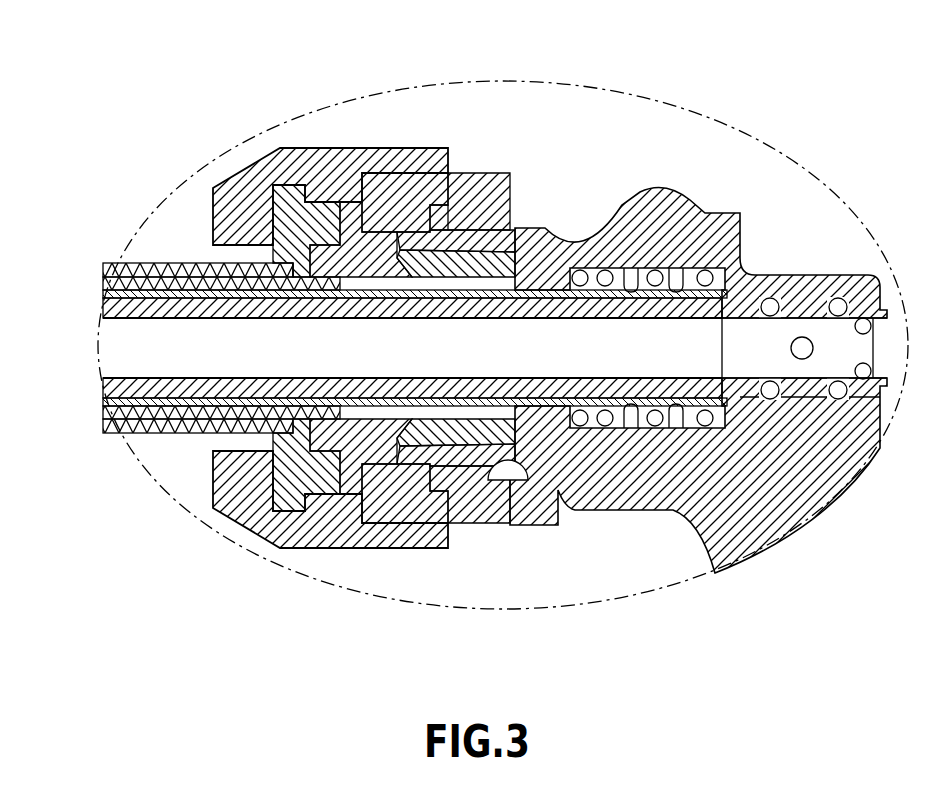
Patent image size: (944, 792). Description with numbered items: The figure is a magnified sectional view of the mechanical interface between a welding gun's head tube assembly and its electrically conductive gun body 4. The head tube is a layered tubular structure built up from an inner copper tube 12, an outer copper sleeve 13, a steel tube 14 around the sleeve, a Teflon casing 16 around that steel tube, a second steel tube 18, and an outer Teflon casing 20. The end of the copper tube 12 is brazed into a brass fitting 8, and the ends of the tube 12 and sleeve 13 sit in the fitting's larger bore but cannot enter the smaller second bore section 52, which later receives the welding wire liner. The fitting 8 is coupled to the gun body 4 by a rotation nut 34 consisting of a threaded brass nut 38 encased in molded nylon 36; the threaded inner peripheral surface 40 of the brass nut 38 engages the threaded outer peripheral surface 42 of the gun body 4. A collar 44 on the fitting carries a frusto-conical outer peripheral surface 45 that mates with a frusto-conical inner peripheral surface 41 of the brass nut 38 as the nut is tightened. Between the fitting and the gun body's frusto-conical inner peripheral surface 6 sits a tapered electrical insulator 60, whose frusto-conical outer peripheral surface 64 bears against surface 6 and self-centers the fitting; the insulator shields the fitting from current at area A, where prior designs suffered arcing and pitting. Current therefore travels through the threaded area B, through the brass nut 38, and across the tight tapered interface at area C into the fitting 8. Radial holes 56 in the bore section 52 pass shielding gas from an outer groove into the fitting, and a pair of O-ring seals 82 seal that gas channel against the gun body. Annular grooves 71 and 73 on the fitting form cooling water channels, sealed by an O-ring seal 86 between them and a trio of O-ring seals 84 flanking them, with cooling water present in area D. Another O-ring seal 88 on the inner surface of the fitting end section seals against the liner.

The welding gun body 4 is at (704, 540).
The frusto-conical inner peripheral surface 6 is at (466, 235).
The fitting 8 is at (548, 245).
The inner copper tube 12 is at (115, 310).
The outer copper sleeve 13 is at (185, 298).
The steel tube 14 is at (115, 288).
The Teflon casing 16 is at (165, 290).
The steel tube 18 is at (154, 278).
The outer Teflon casing 20 is at (147, 265).
The rotation nut 34 is at (367, 147).
The molded nylon 36 is at (222, 160).
The brass nut 38 is at (420, 200).
The threaded inner peripheral surface 40 is at (500, 462).
The frusto-conical inner peripheral surface 41 is at (318, 188).
The threaded outer peripheral surface 42 is at (482, 212).
The collar 44 is at (381, 470).
The frusto-conical outer peripheral surface 45 is at (260, 538).
The second bore section 52 is at (804, 360).
The radial holes 56 is at (782, 390).
The electrical insulator 60 is at (446, 528).
The frusto-conical outer peripheral surface 64 is at (442, 255).
The annular groove 71 is at (632, 270).
The annular groove 73 is at (677, 270).
The O-ring seals 82 is at (835, 298).
The O-ring seals 84 is at (607, 430).
The O-ring seal 86 is at (655, 270).
The O-ring seal 88 is at (858, 320).
The area A is at (461, 450).
The threaded area B is at (450, 195).
The area C is at (340, 228).
The area D is at (631, 445).